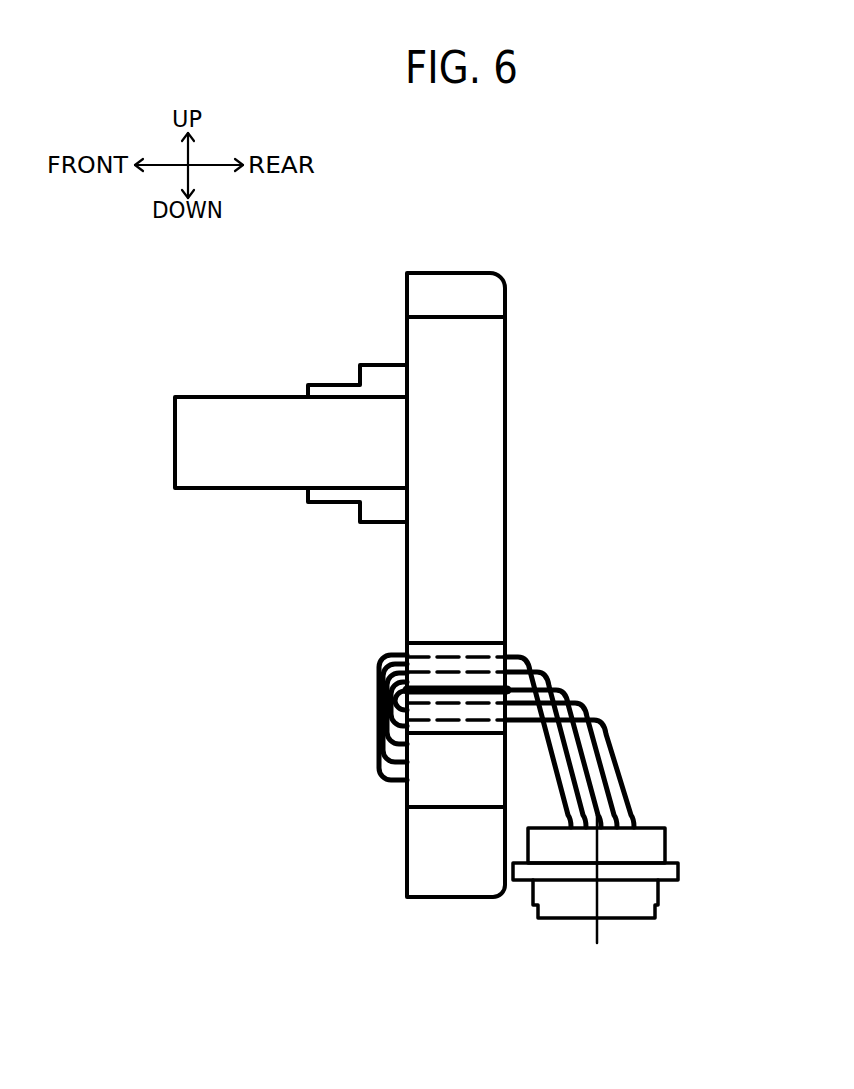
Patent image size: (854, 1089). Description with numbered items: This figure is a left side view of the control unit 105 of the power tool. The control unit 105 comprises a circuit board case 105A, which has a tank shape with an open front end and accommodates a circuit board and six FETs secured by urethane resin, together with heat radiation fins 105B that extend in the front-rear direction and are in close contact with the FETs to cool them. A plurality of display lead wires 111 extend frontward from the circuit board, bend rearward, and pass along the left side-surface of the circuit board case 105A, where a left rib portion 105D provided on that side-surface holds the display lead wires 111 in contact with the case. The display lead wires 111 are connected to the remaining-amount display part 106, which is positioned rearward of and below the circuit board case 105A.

The control unit 105 is at (444, 585).
The circuit board case 105A is at (465, 418).
The heat radiation fins 105B is at (255, 438).
The left rib portion 105D is at (457, 722).
The display lead wires 111 is at (606, 752).
The remaining-amount display part 106 is at (573, 902).